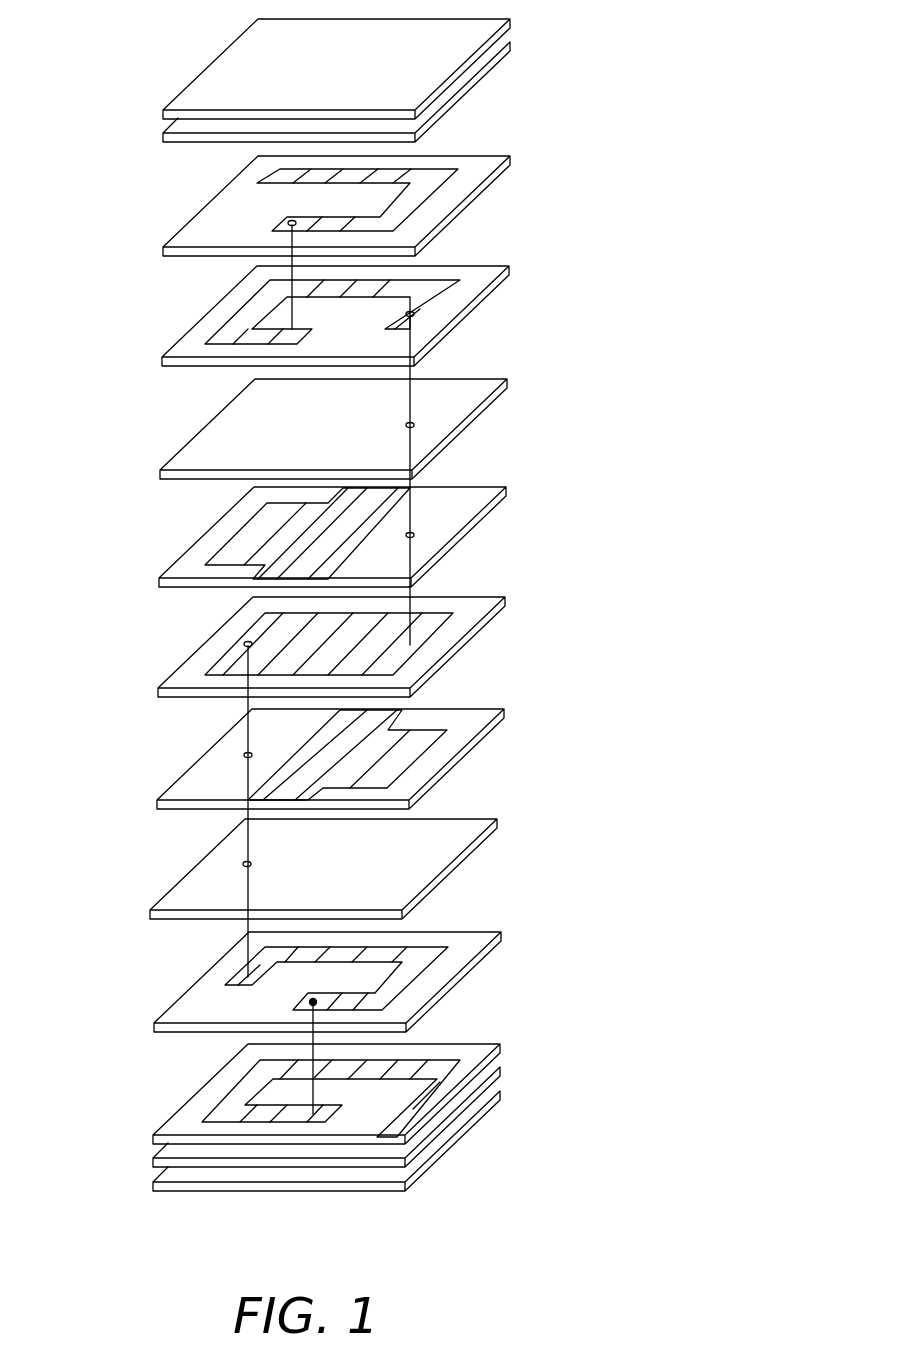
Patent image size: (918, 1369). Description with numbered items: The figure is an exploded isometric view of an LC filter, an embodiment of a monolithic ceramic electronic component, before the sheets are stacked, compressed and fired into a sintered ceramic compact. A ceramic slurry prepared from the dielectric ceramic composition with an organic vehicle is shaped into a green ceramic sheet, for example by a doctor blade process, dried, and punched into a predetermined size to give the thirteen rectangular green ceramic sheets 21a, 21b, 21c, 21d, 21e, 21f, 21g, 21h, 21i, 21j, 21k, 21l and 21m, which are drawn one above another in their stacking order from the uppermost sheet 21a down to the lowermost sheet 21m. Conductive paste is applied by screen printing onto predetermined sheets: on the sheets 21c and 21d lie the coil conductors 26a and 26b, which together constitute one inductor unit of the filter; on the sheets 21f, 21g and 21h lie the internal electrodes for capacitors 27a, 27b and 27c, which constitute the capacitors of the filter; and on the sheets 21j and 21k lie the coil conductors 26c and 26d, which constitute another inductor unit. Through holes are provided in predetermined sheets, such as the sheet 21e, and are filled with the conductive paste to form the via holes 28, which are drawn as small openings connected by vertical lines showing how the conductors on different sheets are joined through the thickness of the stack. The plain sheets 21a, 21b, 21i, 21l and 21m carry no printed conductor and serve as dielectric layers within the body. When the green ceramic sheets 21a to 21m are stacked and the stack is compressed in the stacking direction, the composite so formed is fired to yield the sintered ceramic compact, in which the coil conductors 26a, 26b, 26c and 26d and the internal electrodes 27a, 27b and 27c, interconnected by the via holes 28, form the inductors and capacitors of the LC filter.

The green ceramic sheet 21a is at (243, 52).
The green ceramic sheet 21b is at (177, 127).
The green ceramic sheet 21c is at (483, 168).
The green ceramic sheet 21d is at (475, 282).
The green ceramic sheet 21e is at (470, 390).
The green ceramic sheet 21f is at (477, 502).
The green ceramic sheet 21g is at (210, 645).
The green ceramic sheet 21h is at (183, 785).
The green ceramic sheet 21i is at (180, 900).
The green ceramic sheet 21j is at (180, 1007).
The green ceramic sheet 21k is at (187, 1120).
The green ceramic sheet 21l is at (170, 1150).
The green ceramic sheet 21m is at (213, 1177).
The coil conductor 26a is at (193, 225).
The coil conductor 26b is at (240, 332).
The coil conductor 26c is at (407, 973).
The coil conductor 26d is at (460, 1072).
The internal electrode for capacitor 27a is at (257, 543).
The internal electrode for capacitor 27b is at (423, 628).
The internal electrode for capacitor 27c is at (393, 755).
The via hole 28 is at (416, 425).